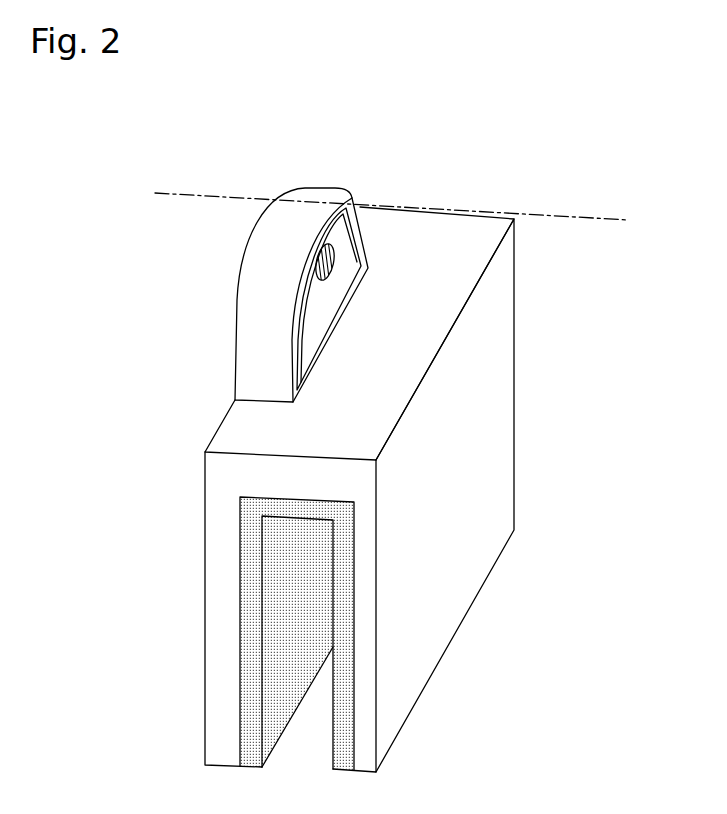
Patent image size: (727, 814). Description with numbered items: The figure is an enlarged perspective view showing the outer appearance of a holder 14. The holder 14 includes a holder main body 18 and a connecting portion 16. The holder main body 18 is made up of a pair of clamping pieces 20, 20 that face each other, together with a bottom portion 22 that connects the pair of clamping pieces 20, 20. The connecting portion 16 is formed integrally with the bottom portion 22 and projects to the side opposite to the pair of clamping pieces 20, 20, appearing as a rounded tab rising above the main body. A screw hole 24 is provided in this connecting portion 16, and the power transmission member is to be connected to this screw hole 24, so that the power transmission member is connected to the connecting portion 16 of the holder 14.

The holder 14 is at (507, 180).
The connecting portion 16 is at (409, 277).
The holder main body 18 is at (361, 489).
The clamping piece 20 is at (222, 585).
The bottom portion 22 is at (233, 433).
The screw hole 24 is at (333, 260).